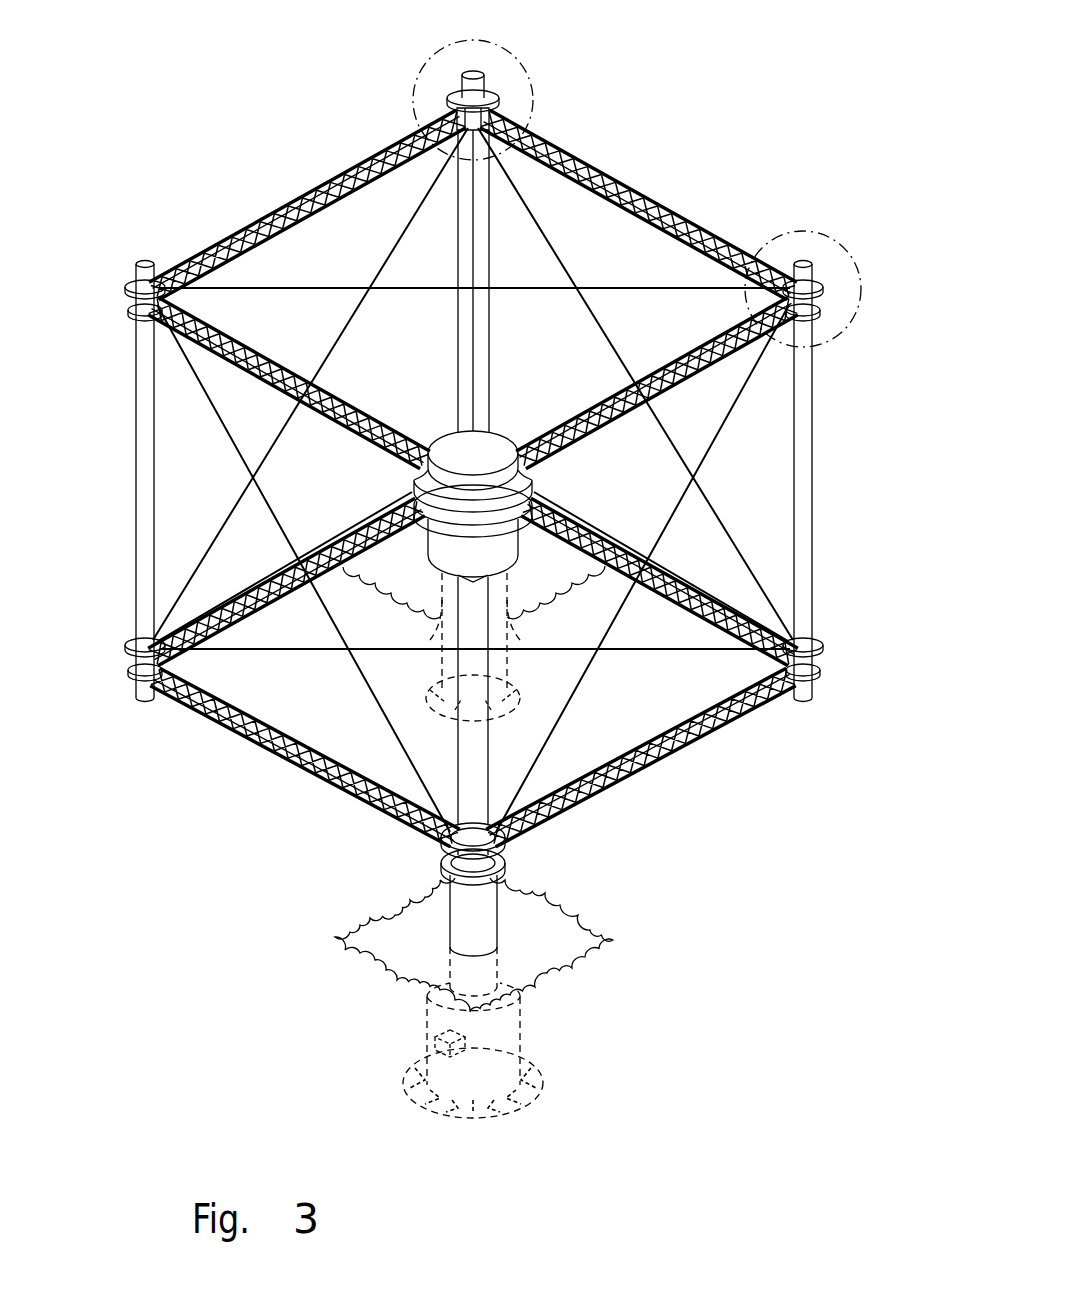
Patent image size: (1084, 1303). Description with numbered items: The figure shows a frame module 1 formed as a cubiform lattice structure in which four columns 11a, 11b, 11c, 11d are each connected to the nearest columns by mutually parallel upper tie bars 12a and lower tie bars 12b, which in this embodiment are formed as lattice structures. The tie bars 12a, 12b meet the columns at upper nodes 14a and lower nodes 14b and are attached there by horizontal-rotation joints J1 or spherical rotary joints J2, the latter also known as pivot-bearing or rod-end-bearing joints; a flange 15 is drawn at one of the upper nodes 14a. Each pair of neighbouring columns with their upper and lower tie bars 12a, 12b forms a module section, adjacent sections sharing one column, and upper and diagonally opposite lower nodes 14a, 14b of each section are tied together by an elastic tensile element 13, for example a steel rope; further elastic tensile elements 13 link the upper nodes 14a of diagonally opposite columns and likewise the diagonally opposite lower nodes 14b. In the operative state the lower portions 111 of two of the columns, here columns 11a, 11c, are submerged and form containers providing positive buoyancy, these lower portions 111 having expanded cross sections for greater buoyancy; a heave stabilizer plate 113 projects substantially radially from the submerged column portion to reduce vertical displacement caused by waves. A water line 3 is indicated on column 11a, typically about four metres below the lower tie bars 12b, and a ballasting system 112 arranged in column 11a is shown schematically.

The frame module 1 is at (698, 122).
The water line 3 is at (450, 950).
The column 11a is at (488, 748).
The column 11b is at (808, 543).
The column 11c is at (488, 190).
The column 11d is at (135, 465).
The upper tie bar 12a is at (702, 232).
The lower tie bar 12b is at (682, 754).
The elastic tensile element 13 is at (736, 406).
The upper node 14a is at (517, 86).
The lower node 14b is at (842, 653).
The flange 15 is at (814, 316).
The horizontal-rotation joint J1 is at (798, 318).
The spherical rotary joint J2 is at (452, 113).
The lower portion 111 is at (522, 1030).
The ballasting system 112 is at (440, 1034).
The base plate 113 is at (543, 1077).